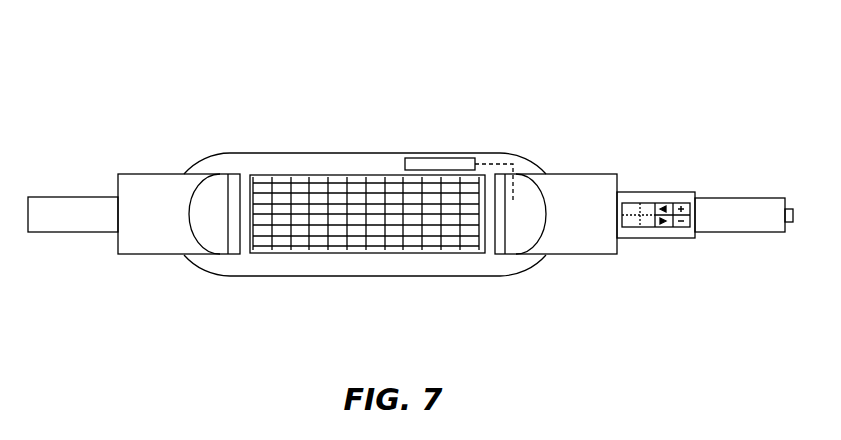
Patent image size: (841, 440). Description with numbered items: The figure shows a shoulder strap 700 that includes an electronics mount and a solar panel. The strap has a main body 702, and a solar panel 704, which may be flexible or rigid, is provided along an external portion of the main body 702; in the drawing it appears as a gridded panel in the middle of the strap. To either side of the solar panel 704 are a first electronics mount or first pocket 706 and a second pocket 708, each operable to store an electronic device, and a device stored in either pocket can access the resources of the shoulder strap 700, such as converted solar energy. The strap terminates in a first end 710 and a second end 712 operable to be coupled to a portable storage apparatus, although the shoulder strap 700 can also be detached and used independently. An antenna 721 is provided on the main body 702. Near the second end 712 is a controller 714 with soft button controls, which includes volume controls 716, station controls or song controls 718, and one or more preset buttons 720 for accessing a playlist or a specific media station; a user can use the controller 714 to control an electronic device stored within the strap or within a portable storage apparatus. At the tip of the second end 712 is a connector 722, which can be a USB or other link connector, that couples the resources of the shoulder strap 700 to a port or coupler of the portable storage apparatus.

The shoulder strap 700 is at (92, 69).
The main body 702 is at (363, 150).
The solar panel 704 is at (380, 252).
The first pocket 706 is at (168, 195).
The second pocket 708 is at (577, 197).
The first end 710 is at (47, 199).
The second end 712 is at (752, 202).
The controller 714 is at (688, 227).
The volume controls 716 is at (681, 204).
The station controls or song controls 718 is at (663, 204).
The preset button 720 is at (638, 228).
The antenna 721 is at (462, 165).
The connector 722 is at (793, 212).